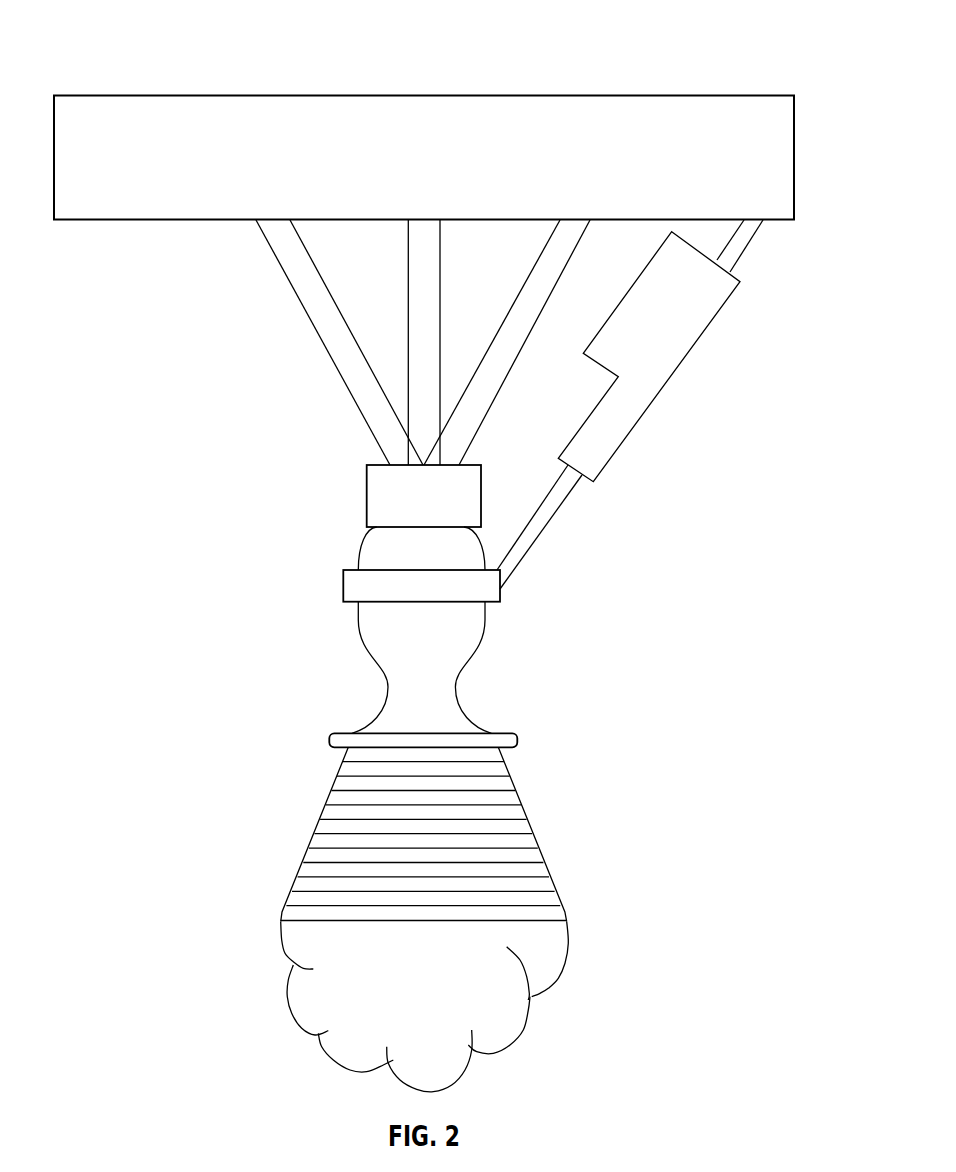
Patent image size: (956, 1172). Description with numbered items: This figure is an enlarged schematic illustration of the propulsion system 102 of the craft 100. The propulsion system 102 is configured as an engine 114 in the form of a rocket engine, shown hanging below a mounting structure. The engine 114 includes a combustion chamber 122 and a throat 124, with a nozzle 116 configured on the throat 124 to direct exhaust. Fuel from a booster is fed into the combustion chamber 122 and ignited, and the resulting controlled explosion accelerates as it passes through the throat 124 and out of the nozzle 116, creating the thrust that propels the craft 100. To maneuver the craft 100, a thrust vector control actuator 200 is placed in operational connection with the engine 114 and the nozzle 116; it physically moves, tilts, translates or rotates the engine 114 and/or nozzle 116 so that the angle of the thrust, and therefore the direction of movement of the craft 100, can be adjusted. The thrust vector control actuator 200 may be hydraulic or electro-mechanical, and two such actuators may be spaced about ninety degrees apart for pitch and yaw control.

The craft 100 is at (769, 51).
The propulsion system 102 is at (763, 315).
The thrust vector control actuator 200 is at (632, 408).
The engine 114 is at (282, 656).
The combustion chamber 122 is at (468, 640).
The throat 124 is at (383, 710).
The nozzle 116 is at (313, 857).